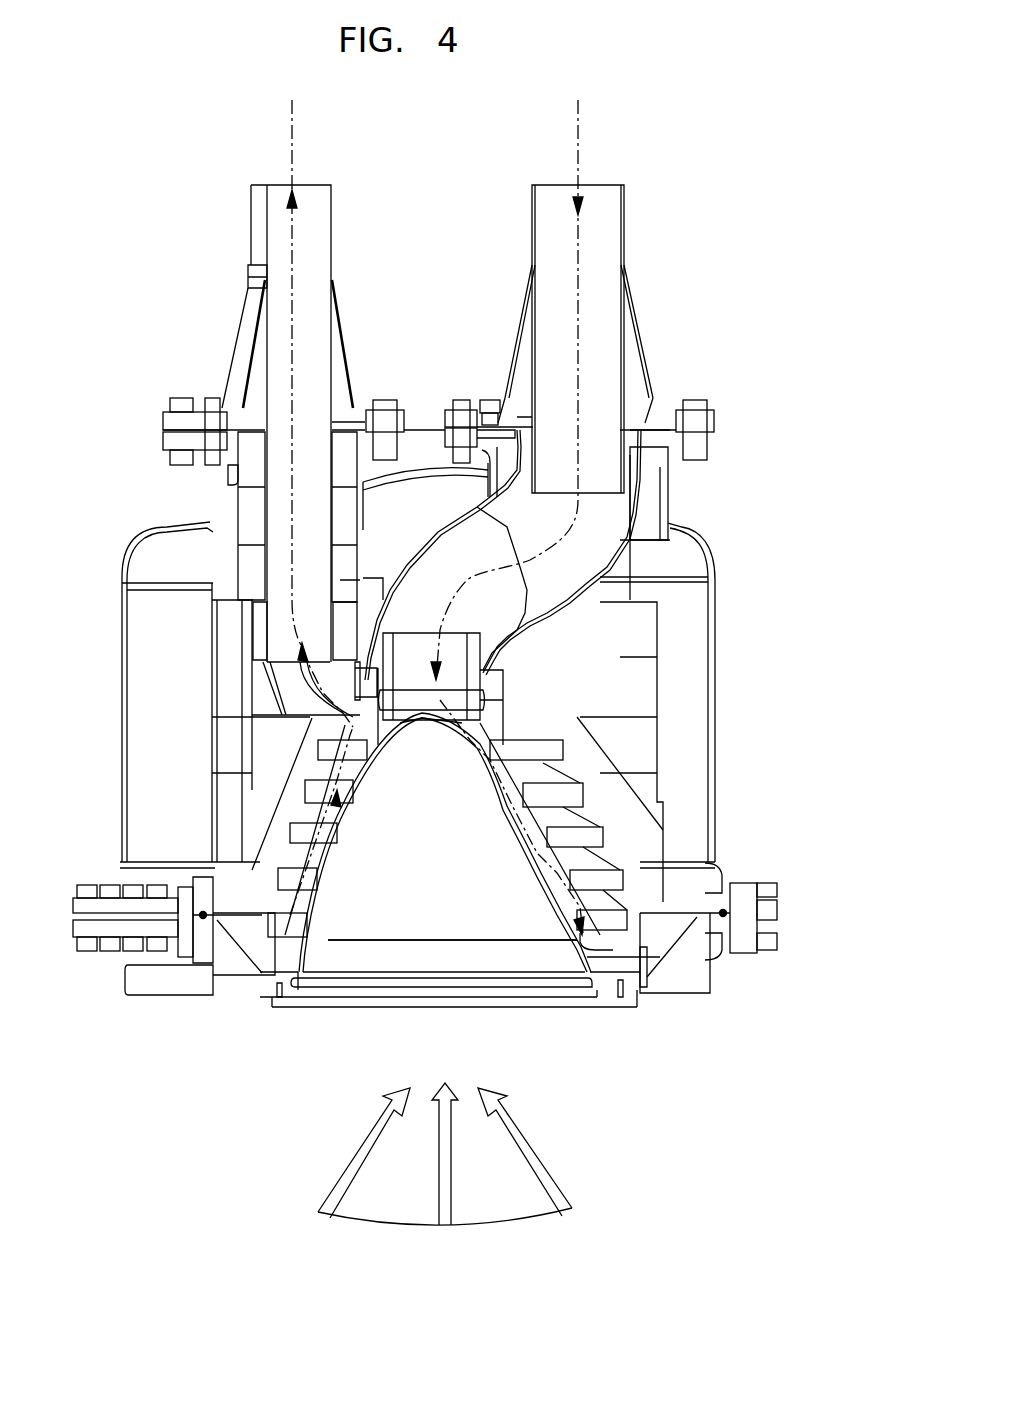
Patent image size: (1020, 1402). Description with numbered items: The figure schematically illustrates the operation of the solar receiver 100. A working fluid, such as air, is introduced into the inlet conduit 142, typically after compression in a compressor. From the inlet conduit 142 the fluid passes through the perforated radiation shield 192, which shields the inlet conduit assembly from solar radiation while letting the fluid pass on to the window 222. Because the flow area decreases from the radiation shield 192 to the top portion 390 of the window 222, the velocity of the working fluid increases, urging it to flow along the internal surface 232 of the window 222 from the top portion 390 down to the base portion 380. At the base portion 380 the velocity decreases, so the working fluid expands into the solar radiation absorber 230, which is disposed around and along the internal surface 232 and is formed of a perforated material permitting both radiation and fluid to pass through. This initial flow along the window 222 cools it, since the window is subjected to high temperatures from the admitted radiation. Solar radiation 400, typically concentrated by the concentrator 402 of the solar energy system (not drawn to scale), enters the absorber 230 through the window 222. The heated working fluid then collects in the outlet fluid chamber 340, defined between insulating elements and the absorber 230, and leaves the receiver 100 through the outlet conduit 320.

The receiver 100 is at (87, 120).
The inlet conduit 142 is at (590, 200).
The radiation shield 192 is at (520, 695).
The window 222 is at (355, 820).
The solar radiation absorber 230 is at (375, 780).
The internal surface 232 is at (348, 830).
The outlet conduit 320 is at (275, 195).
The outlet fluid chamber 340 is at (308, 678).
The base portion 380 is at (340, 940).
The top portion 390 is at (468, 732).
The solar radiation 400 is at (553, 1180).
The concentrator 402 is at (525, 1222).